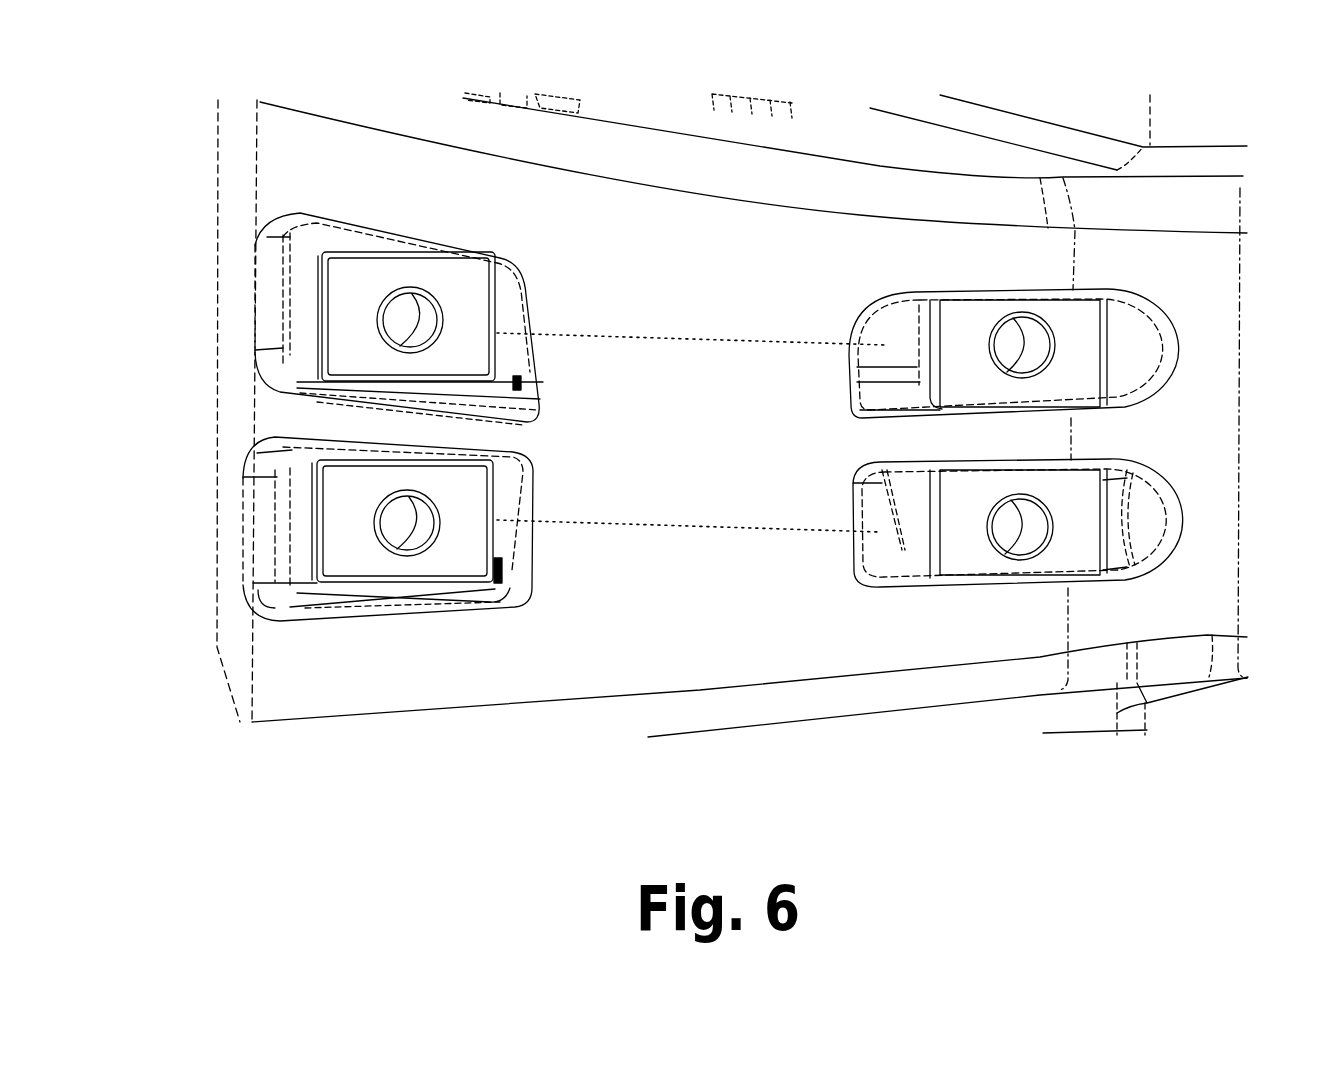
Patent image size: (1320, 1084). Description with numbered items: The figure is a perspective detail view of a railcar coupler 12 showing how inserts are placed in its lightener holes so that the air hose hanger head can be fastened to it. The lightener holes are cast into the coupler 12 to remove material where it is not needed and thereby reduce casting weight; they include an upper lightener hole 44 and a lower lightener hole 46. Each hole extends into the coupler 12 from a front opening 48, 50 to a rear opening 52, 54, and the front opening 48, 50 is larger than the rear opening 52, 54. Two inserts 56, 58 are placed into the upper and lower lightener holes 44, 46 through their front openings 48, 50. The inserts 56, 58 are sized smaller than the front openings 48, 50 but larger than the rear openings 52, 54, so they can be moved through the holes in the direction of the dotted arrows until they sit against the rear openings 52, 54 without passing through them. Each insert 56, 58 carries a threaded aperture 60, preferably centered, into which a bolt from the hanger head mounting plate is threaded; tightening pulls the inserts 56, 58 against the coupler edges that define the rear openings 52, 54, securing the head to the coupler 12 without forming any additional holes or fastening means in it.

The coupler 12 is at (782, 251).
The upper lightener hole 44 is at (300, 301).
The lower lightener hole 46 is at (297, 521).
The front opening 48 is at (519, 392).
The front opening 50 is at (504, 578).
The rear opening 52 is at (877, 389).
The rear opening 54 is at (895, 550).
The insert 56 is at (470, 277).
The insert 58 is at (1075, 487).
The threaded aperture 60 is at (438, 333).